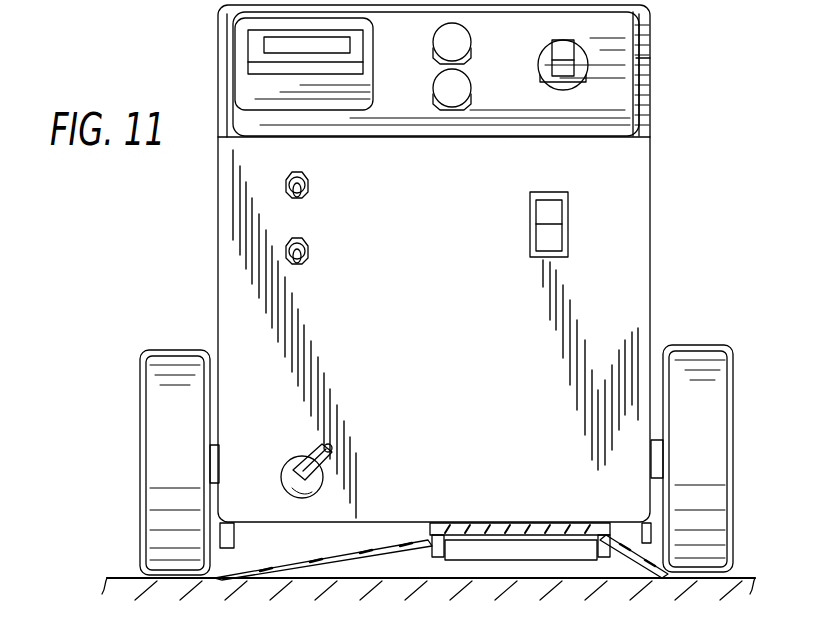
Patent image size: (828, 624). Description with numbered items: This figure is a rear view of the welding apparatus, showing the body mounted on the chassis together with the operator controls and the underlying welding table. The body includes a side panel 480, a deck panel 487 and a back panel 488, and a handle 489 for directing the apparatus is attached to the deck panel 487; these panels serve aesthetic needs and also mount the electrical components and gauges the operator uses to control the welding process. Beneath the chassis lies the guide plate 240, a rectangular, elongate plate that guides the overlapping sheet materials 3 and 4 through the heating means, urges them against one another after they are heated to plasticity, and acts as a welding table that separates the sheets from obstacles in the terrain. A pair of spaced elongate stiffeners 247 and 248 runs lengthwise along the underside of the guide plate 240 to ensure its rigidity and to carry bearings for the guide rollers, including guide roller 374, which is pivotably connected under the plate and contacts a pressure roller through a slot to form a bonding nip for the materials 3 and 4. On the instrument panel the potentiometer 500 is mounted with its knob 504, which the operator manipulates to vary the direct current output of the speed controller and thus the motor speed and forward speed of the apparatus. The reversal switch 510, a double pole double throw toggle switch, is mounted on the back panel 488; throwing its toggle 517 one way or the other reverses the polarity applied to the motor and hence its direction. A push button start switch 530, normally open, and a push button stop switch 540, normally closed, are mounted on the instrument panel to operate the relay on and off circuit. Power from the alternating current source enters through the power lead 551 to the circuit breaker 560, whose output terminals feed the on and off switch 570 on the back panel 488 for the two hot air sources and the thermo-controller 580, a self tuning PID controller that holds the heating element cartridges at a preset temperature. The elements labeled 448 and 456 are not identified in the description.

The material 3 is at (294, 562).
The material 4 is at (636, 542).
The guide plate 240 is at (587, 548).
The stiffener 247 is at (432, 553).
The stiffener 248 is at (634, 552).
The guide roller 374 is at (542, 557).
The left wheel 448 is at (172, 465).
The right wheel 456 is at (713, 501).
The side panel 480 is at (633, 40).
The deck panel 487 is at (645, 130).
The back panel 488 is at (620, 227).
The handle 489 is at (636, 63).
The potentiometer 500 is at (550, 39).
The knob 504 is at (560, 48).
The reversal switch 510 is at (285, 254).
The toggle 517 is at (310, 252).
The push button start switch 530 is at (470, 34).
The push button stop switch 540 is at (432, 84).
The power lead 551 is at (316, 450).
The circuit breaker 560 is at (558, 212).
The on and off switch 570 is at (310, 188).
The thermo-controller 580 is at (283, 12).